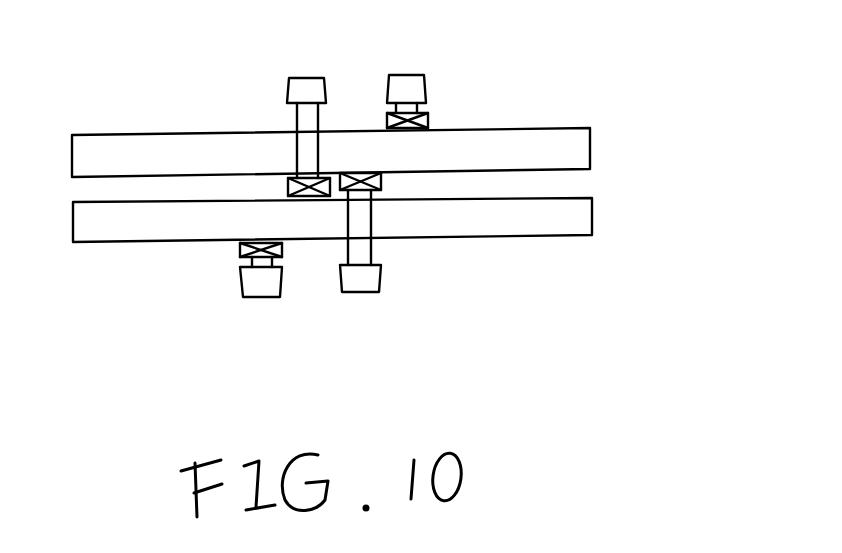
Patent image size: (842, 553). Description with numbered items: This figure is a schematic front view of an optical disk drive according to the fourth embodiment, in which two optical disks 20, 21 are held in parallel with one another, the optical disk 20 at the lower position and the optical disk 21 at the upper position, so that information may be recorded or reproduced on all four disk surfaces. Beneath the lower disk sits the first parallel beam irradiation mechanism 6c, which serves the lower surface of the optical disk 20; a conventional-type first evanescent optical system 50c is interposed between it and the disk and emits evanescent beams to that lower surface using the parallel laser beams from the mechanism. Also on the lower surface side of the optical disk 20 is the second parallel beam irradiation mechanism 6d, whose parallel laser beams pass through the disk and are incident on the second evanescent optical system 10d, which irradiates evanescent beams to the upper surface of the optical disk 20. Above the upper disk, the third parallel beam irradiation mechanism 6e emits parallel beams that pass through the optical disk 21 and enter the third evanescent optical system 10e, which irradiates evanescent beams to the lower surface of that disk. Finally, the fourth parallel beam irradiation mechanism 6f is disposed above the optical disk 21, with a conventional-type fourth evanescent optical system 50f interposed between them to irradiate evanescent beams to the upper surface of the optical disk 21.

The optical disk 20 is at (593, 215).
The optical disk 21 is at (593, 152).
The first parallel beam irradiation mechanism 6c is at (262, 297).
The second parallel beam irradiation mechanism 6d is at (360, 292).
The third parallel beam irradiation mechanism 6e is at (305, 78).
The fourth parallel beam irradiation mechanism 6f is at (398, 75).
The second evanescent optical system 10d is at (381, 180).
The third evanescent optical system 10e is at (288, 185).
The first evanescent optical system 50c is at (242, 244).
The fourth evanescent optical system 50f is at (432, 118).